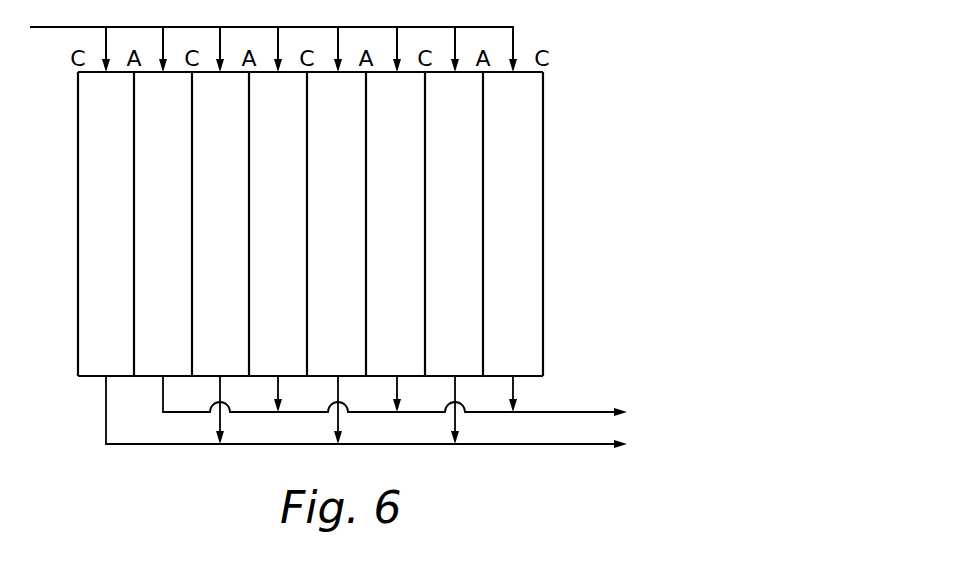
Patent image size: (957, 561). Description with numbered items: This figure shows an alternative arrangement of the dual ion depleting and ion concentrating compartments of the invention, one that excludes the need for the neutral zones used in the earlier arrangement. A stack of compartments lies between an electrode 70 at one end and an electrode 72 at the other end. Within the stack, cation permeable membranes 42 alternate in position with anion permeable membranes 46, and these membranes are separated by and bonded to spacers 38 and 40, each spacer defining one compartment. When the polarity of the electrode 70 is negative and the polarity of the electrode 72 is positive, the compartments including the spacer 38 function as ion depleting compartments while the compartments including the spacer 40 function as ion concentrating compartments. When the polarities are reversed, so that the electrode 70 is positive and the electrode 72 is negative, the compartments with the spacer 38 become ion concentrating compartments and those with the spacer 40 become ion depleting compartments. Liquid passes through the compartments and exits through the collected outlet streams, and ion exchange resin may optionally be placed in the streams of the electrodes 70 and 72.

The spacer 38 is at (468, 182).
The spacer 40 is at (526, 182).
The cation permeable membrane 42 is at (80, 101).
The anion permeable membrane 46 is at (136, 101).
The electrode 70 is at (61, 162).
The electrode 72 is at (590, 165).